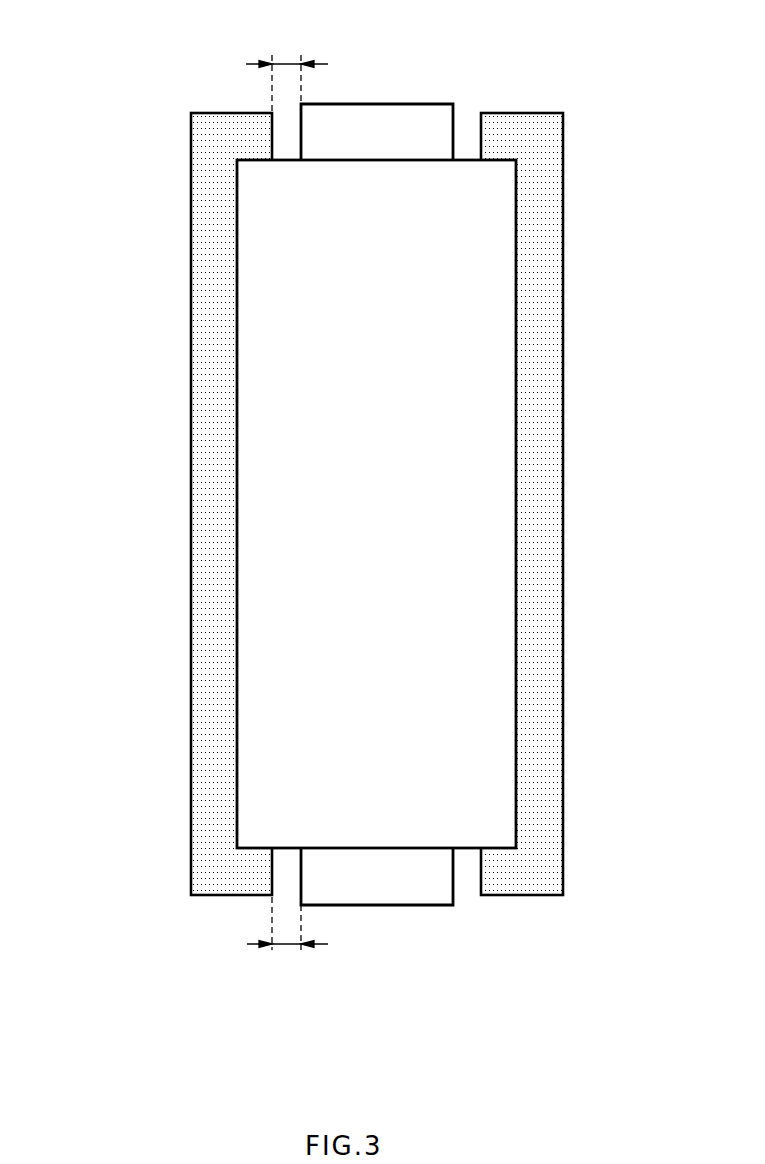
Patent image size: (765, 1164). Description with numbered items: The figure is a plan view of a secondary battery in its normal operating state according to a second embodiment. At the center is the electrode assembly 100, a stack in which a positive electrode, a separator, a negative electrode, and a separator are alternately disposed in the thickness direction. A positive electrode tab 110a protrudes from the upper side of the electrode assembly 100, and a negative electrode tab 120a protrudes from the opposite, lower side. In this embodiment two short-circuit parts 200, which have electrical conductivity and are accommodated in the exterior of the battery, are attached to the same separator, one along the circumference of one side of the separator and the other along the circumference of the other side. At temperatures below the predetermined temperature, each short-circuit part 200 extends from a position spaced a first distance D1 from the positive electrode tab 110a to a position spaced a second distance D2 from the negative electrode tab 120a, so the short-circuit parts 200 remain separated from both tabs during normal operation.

The electrode assembly 100 is at (140, 505).
The positive electrode tab 110a is at (377, 120).
The negative electrode tab 120a is at (377, 905).
The short-circuit part 200 is at (205, 316).
The first distance D1 is at (285, 64).
The second distance D2 is at (286, 944).